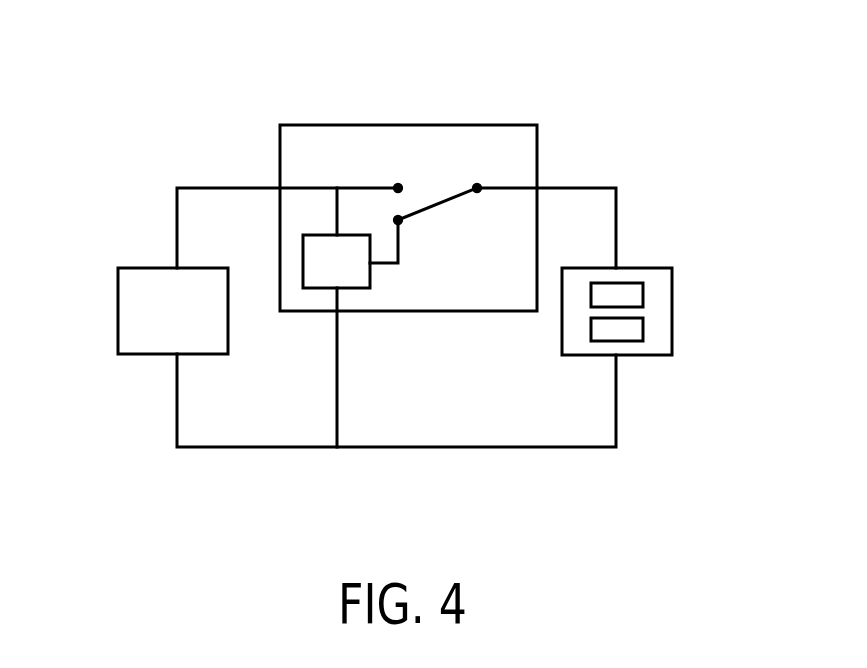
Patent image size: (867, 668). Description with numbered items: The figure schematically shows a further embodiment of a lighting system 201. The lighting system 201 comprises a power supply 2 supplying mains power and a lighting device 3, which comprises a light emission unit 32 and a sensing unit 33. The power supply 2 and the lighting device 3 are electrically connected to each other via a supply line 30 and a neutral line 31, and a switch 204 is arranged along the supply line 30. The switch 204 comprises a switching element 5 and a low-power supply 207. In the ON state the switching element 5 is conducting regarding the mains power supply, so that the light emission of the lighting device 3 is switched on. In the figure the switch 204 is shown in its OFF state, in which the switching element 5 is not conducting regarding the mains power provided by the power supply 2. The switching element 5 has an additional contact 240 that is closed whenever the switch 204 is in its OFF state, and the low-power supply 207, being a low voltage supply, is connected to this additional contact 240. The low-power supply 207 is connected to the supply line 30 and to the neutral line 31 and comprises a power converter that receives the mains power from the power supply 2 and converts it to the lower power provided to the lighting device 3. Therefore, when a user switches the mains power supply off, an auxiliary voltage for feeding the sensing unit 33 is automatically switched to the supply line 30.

The lighting system 201 is at (660, 72).
The switch 204 is at (412, 125).
The additional contact 240 is at (375, 195).
The switching element 5 is at (450, 167).
The low-power supply 207 is at (346, 288).
The supply line 30 is at (160, 165).
The neutral line 31 is at (150, 452).
The power supply 2 is at (130, 354).
The lighting device 3 is at (663, 311).
The light emission unit 32 is at (643, 288).
The sensing unit 33 is at (643, 330).